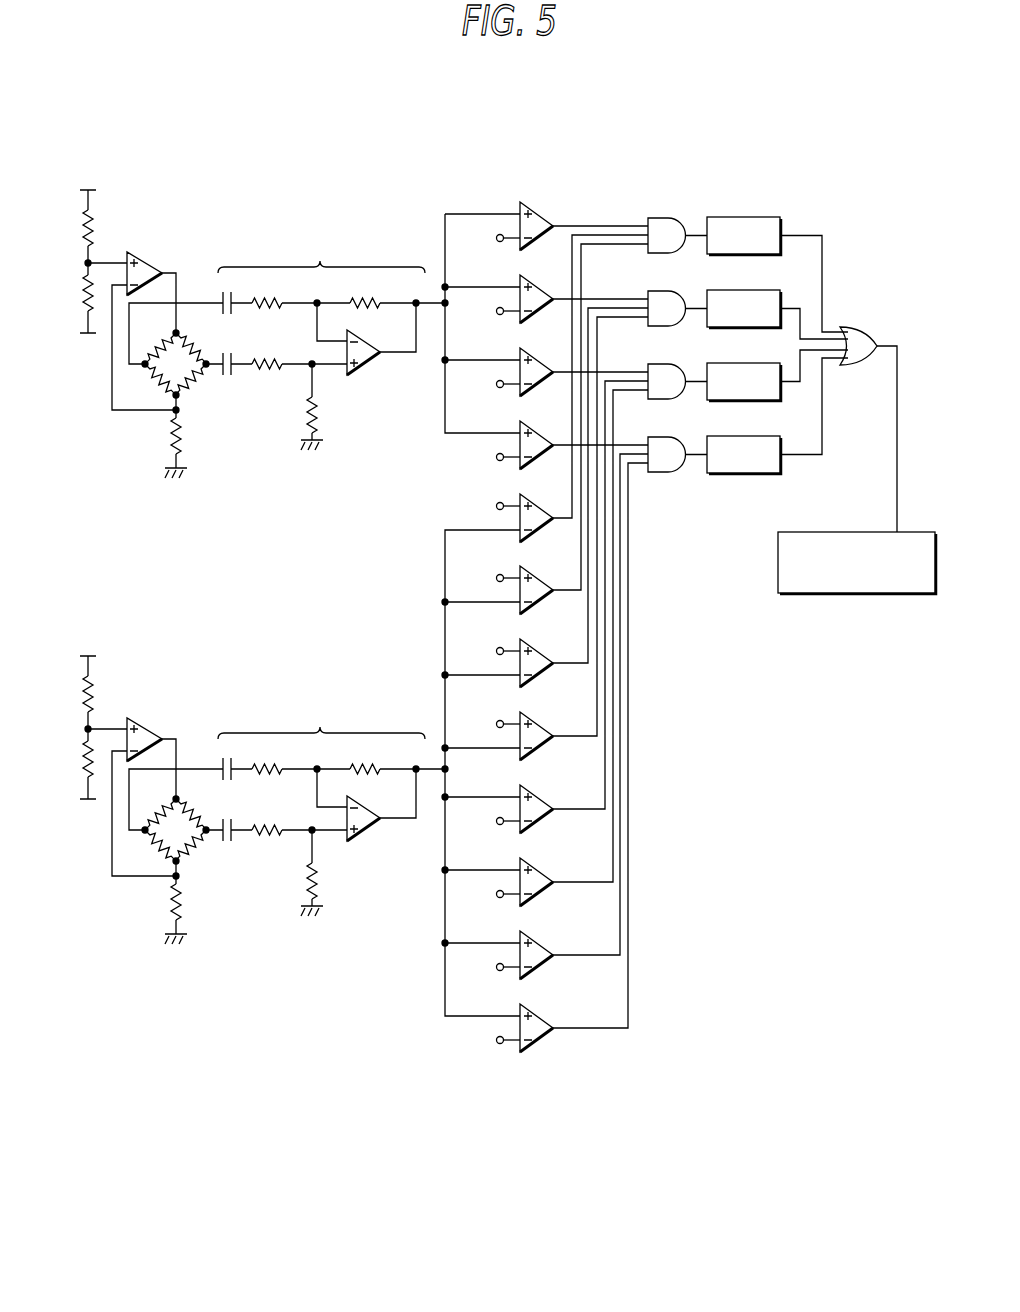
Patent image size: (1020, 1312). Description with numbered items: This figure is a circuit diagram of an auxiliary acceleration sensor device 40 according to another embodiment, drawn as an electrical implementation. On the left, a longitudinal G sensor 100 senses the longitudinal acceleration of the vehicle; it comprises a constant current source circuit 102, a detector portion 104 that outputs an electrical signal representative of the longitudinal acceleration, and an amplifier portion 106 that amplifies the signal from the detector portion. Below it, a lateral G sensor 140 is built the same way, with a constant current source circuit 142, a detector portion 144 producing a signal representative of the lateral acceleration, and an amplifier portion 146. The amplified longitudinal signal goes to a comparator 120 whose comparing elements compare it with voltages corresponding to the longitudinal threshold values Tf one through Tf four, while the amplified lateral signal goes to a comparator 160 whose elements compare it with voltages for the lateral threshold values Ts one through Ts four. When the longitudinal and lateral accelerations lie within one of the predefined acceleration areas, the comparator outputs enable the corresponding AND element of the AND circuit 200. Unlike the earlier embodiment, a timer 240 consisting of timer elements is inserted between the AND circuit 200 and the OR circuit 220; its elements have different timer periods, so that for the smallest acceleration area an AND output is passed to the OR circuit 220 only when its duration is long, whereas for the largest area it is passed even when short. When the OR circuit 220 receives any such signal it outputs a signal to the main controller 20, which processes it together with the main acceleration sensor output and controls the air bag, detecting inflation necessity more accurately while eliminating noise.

The main controller 20 is at (778, 560).
The auxiliary acceleration sensor device 40 is at (512, 126).
The longitudinal G sensor 100 is at (278, 184).
The constant current source circuit 102 is at (147, 262).
The detector portion 104 is at (177, 350).
The amplifier portion 106 is at (331, 326).
The comparator 120 is at (545, 194).
The lateral G sensor 140 is at (274, 1100).
The constant current source circuit 142 is at (128, 766).
The detector portion 144 is at (176, 825).
The amplifier portion 146 is at (331, 792).
The comparator 160 is at (503, 824).
The AND circuit 200 is at (664, 318).
The OR circuit 220 is at (851, 367).
The timer 240 is at (762, 196).